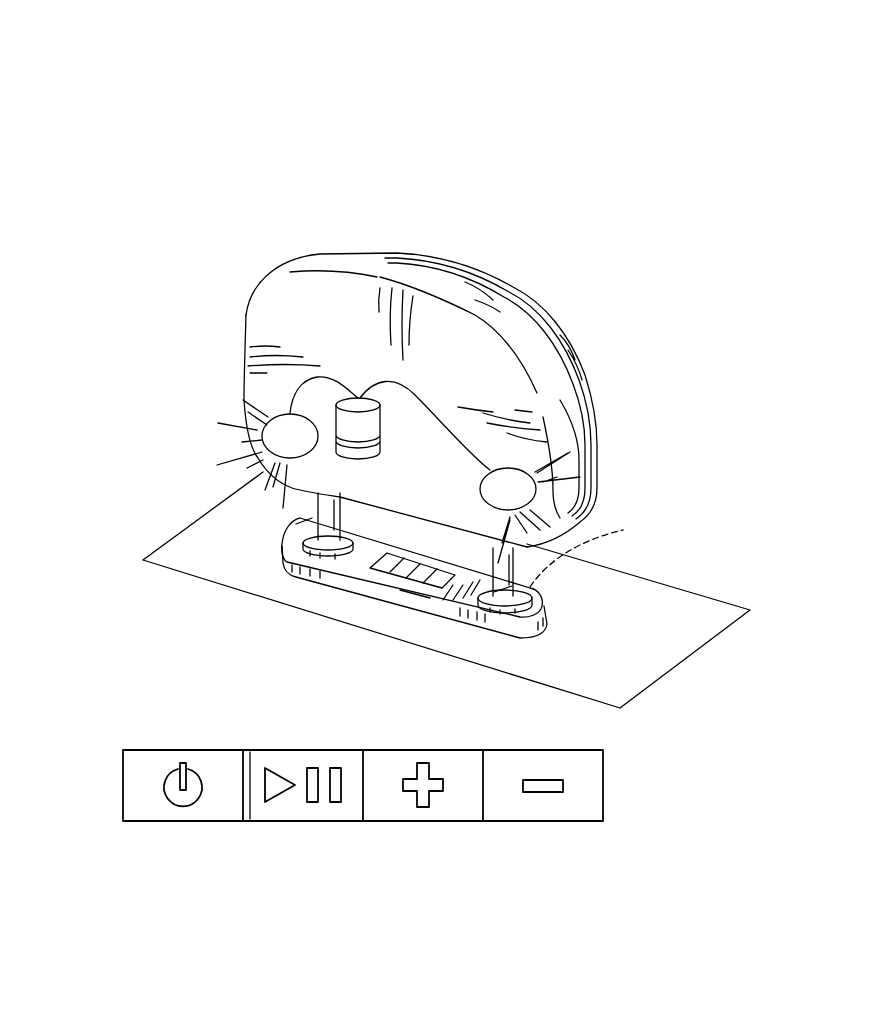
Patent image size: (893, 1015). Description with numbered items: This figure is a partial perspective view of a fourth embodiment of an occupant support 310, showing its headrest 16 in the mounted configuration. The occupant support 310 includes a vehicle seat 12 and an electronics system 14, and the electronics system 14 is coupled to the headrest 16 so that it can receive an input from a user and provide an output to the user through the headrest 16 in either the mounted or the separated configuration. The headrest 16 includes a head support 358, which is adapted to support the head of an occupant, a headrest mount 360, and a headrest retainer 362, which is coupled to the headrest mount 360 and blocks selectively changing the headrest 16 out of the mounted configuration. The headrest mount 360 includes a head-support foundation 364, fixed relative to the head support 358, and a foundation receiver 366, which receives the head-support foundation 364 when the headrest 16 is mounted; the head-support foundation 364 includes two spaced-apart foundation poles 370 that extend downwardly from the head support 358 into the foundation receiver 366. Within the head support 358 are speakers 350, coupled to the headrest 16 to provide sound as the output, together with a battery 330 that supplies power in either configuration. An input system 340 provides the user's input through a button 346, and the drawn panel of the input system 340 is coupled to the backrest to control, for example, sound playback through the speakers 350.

The occupant support 310 is at (137, 30).
The vehicle seat 12 is at (240, 57).
The electronics system 14 is at (234, 350).
The headrest 16 is at (660, 513).
The head support 358 is at (392, 253).
The headrest mount 360 is at (728, 498).
The battery 330 is at (267, 472).
The speaker 350 is at (288, 423).
The head-support foundation 364 is at (563, 583).
The foundation poles 370 is at (315, 512).
The headrest retainer 362 is at (602, 552).
The foundation receiver 366 is at (435, 613).
The input system 340 is at (399, 578).
The button 346 is at (280, 822).